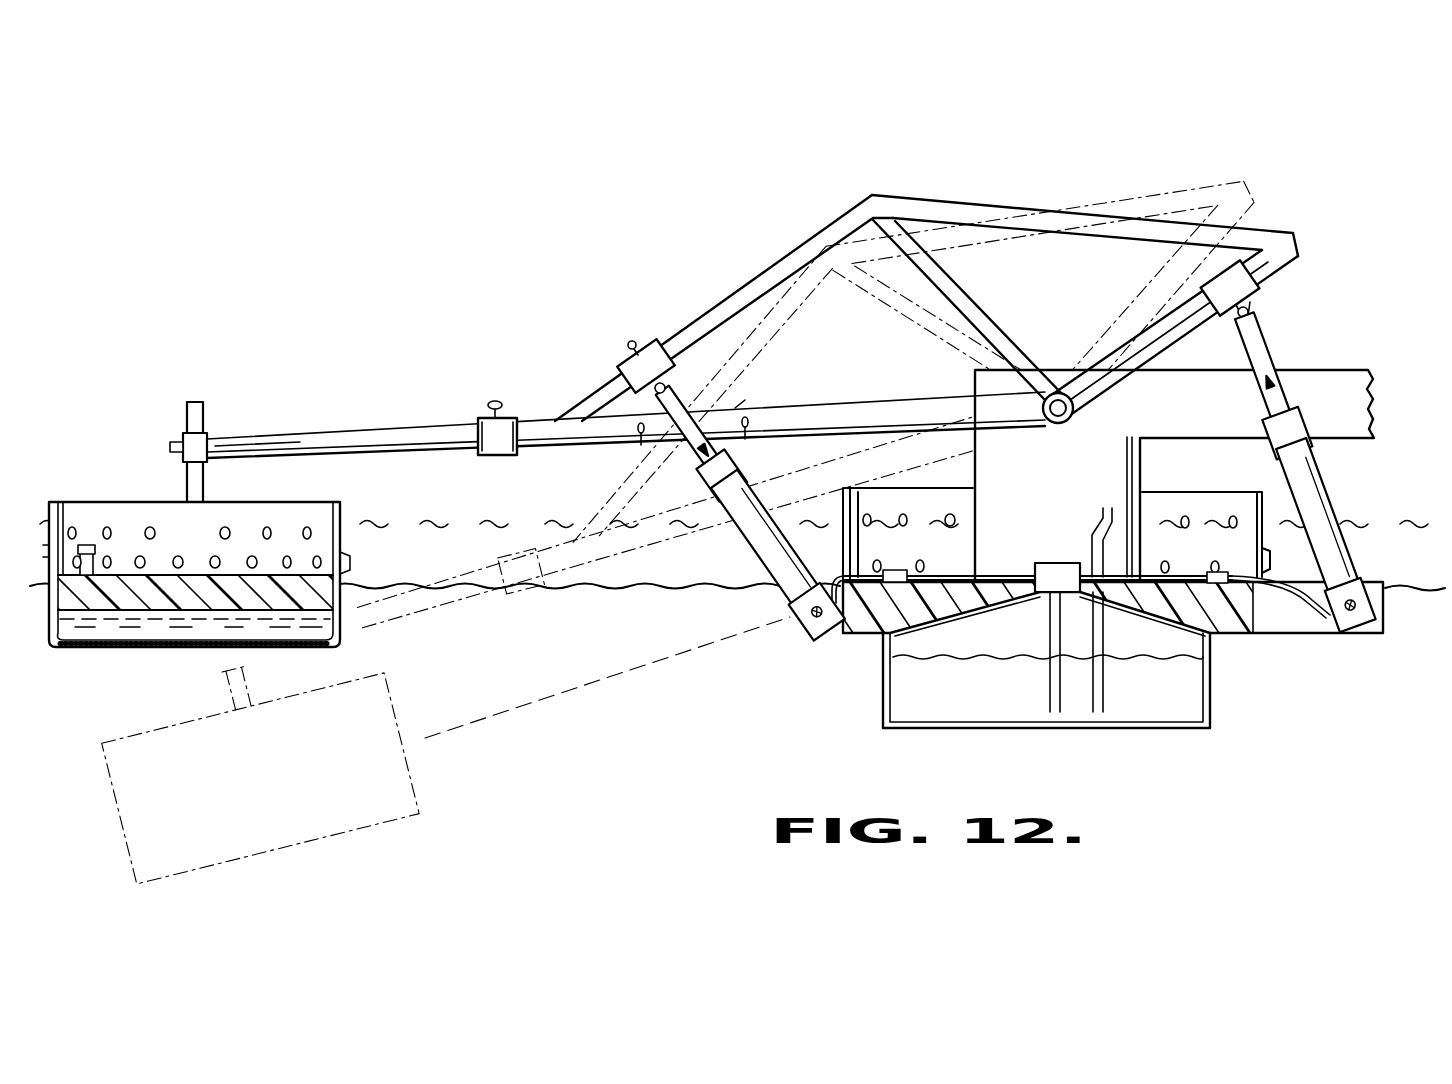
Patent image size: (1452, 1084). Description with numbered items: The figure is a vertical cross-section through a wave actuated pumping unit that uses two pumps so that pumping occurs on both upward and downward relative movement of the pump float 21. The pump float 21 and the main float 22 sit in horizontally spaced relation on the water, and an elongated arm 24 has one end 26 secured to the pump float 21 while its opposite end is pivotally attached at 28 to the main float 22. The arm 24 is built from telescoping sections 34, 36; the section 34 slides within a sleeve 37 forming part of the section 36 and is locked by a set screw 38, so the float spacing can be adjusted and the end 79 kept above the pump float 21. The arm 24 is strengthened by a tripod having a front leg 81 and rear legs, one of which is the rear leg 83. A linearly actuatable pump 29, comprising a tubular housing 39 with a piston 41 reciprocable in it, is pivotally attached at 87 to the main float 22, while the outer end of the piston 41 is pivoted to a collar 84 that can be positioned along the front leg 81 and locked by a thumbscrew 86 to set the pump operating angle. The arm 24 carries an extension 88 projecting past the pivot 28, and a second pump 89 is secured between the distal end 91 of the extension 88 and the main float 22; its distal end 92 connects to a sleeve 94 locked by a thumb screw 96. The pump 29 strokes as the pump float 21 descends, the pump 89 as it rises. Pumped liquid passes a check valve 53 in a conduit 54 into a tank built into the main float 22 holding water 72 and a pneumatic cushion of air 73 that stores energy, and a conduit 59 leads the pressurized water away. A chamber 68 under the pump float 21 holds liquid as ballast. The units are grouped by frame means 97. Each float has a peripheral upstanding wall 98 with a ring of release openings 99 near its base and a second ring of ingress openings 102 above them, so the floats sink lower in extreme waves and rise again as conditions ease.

The pump float 21 is at (115, 652).
The main float 22 is at (860, 635).
The arm 24 is at (470, 412).
The end of arm 26 is at (183, 437).
The pivotal attachment 28 is at (1052, 426).
The linearly actuatable pump 29 is at (737, 532).
The arm section 34 is at (373, 428).
The arm section 36 is at (572, 450).
The sleeve 37 is at (492, 456).
The set screw 38 is at (497, 402).
The tubular housing 39 is at (768, 575).
The piston 41 is at (728, 406).
The check valve 53 is at (894, 570).
The conduit 54 is at (998, 574).
The conduit 59 is at (1106, 520).
The chamber 68 is at (197, 628).
The water 72 is at (950, 706).
The pneumatic cushion of air 73 is at (1180, 650).
The end of arm 79 is at (233, 437).
The front leg 81 is at (748, 288).
The rear leg 83 is at (993, 318).
The collar 84 is at (626, 360).
The thumbscrew 86 is at (628, 343).
The pivotal attachment 87 is at (800, 625).
The extension 88 is at (1118, 370).
The second linearly actuatable pump 89 is at (1330, 475).
The distal end of extension 91 is at (1296, 254).
The distal end of pump 92 is at (1265, 337).
The sleeve 94 is at (1222, 320).
The thumb screw 96 is at (1240, 272).
The frame means 97 is at (1069, 522).
The peripheral upstanding wall 98 is at (300, 506).
The release openings 99 is at (285, 556).
The ingress openings 102 is at (148, 527).